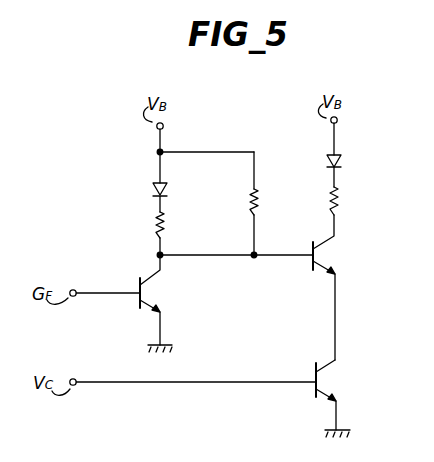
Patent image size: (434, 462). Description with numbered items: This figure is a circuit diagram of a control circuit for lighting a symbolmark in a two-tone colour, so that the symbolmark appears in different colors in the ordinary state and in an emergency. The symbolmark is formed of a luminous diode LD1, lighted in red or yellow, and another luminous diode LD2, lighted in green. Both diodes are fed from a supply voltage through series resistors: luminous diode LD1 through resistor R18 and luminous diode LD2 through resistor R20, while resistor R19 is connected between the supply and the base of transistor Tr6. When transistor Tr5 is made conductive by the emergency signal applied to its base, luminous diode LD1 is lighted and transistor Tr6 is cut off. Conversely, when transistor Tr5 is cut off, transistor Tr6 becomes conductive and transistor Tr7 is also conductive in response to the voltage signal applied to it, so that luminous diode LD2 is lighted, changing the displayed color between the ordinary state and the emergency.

The luminous diode LD1 is at (154, 189).
The luminous diode LD2 is at (340, 162).
The resistor R18 is at (165, 224).
The resistor R19 is at (258, 206).
The resistor R20 is at (339, 206).
The transistor Tr5 is at (161, 293).
The transistor Tr6 is at (336, 256).
The transistor Tr7 is at (337, 380).